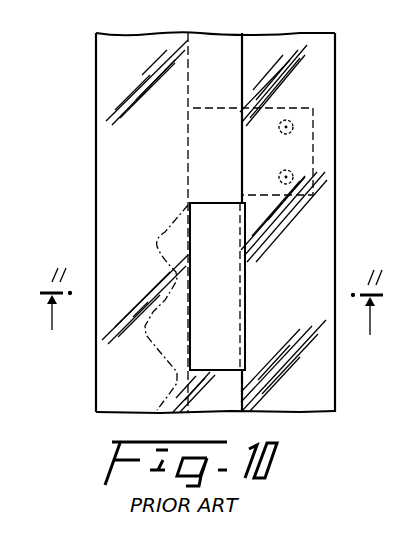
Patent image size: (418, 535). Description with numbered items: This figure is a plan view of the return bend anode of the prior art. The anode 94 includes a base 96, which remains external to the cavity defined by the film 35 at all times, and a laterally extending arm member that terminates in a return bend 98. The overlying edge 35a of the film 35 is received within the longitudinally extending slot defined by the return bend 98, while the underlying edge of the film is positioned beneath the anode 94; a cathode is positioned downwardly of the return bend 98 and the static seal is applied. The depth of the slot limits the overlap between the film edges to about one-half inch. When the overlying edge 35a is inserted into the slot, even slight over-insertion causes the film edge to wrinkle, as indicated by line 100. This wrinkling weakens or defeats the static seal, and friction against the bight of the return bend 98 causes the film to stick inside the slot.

The film 35 is at (320, 48).
The overlying edge 35a is at (242, 126).
The base 96 is at (312, 142).
The anode 94 is at (235, 240).
The return bend 98 is at (227, 332).
The line 100 is at (165, 232).